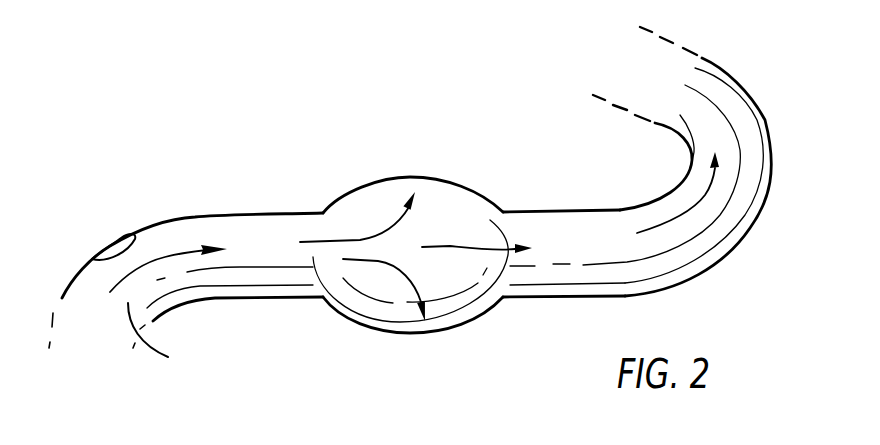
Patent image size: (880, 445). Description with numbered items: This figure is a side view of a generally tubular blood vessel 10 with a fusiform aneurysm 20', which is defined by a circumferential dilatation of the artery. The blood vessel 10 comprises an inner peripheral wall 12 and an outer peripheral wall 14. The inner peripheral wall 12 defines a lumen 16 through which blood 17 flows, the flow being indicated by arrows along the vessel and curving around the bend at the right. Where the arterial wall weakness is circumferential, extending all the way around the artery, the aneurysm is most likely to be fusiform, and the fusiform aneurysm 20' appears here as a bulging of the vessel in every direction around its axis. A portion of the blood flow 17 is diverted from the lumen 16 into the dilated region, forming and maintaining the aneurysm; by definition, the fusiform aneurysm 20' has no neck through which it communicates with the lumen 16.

The blood vessel 10 is at (590, 175).
The inner peripheral wall 12 is at (92, 259).
The outer peripheral wall 14 is at (228, 213).
The lumen 16 is at (160, 337).
The blood 17 is at (165, 257).
The fusiform aneurysm 20' is at (410, 213).